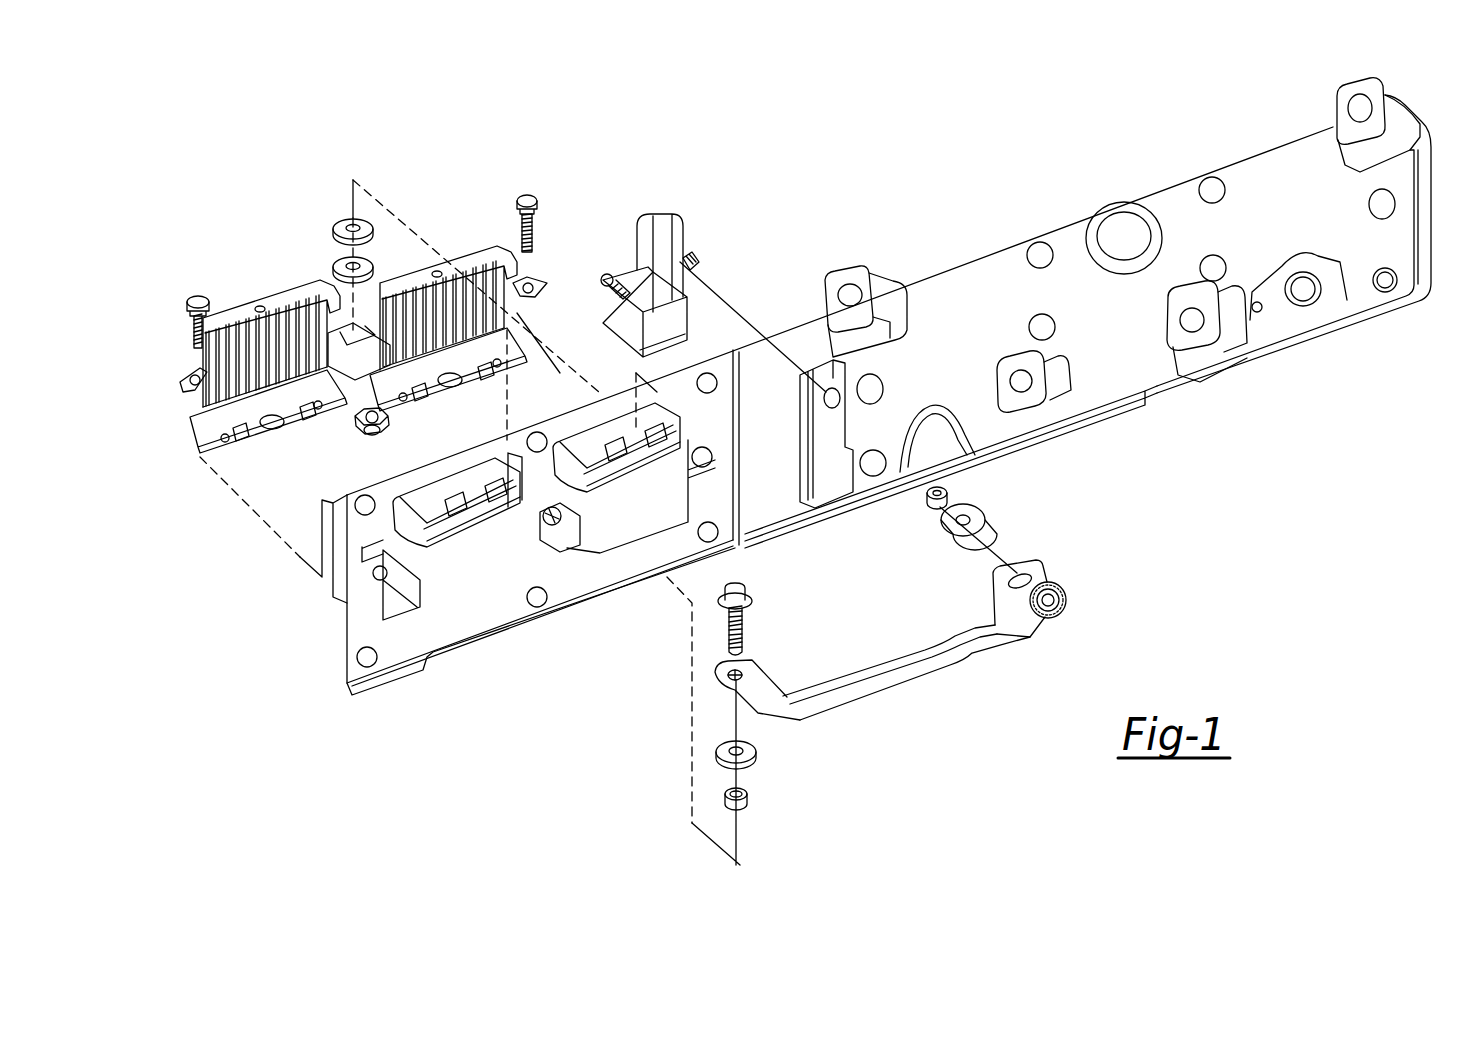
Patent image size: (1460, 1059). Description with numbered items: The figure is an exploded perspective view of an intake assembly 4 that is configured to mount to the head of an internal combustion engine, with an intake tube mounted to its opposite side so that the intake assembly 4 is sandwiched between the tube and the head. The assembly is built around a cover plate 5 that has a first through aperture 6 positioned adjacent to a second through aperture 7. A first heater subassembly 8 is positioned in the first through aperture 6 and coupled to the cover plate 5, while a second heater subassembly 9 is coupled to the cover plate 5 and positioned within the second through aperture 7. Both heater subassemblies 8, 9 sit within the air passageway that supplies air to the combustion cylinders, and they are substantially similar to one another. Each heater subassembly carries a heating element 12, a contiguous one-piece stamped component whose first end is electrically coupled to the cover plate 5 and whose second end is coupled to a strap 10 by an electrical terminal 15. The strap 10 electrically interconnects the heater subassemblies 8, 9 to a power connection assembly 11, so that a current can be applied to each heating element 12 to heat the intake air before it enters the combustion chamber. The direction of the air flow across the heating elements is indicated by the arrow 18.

The intake assembly 4 is at (1005, 155).
The cover plate 5 is at (1181, 192).
The first through aperture 6 is at (400, 588).
The second through aperture 7 is at (620, 478).
The first heater subassembly 8 is at (241, 314).
The second heater subassembly 9 is at (471, 252).
The strap 10 is at (862, 693).
The power connection assembly 11 is at (670, 222).
The heating element 12 is at (218, 393).
The electrical terminal 15 is at (745, 621).
The arrow indicating direction of air flow 18 is at (167, 341).